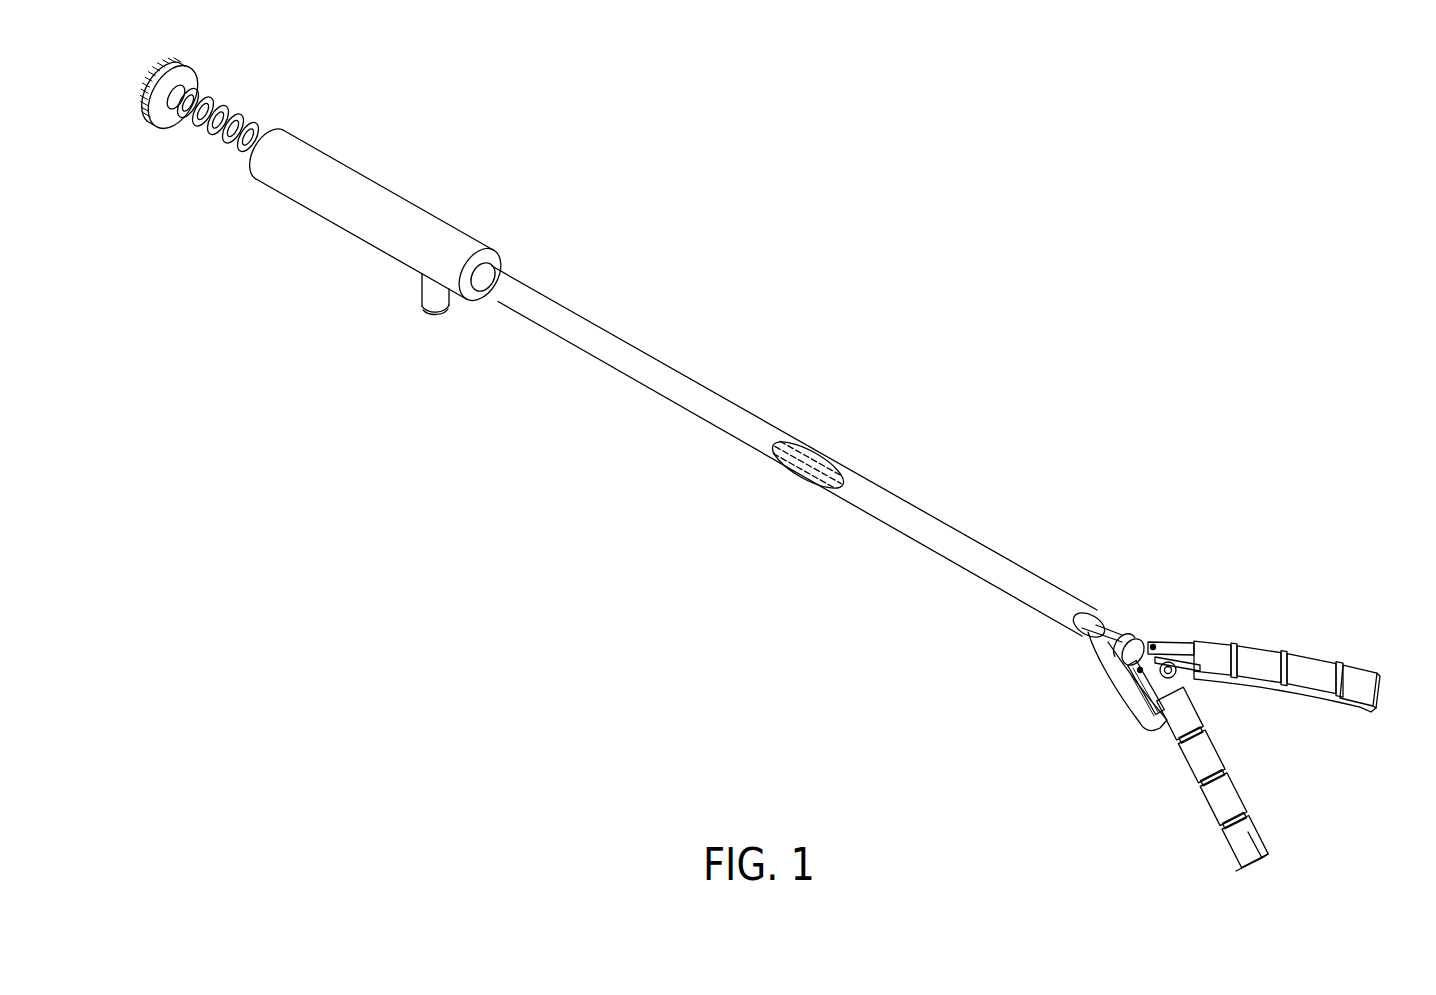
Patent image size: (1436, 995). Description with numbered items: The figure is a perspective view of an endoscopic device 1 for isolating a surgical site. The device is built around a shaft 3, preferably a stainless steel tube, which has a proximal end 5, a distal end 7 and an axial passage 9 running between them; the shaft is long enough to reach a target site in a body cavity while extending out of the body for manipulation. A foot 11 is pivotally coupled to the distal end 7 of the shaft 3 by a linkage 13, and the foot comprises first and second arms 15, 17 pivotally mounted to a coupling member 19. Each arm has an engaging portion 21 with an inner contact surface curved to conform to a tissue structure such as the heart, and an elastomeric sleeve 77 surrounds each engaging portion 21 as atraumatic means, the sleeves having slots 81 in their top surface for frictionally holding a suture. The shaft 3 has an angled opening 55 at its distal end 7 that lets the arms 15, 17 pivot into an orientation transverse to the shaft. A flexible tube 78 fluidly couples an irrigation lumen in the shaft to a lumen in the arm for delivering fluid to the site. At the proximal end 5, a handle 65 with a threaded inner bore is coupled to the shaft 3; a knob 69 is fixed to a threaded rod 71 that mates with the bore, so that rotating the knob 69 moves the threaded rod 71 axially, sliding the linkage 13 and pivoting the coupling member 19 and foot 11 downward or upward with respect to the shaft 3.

The endoscopic device 1 is at (916, 268).
The shaft 3 is at (693, 400).
The proximal end 5 is at (512, 272).
The distal end 7 is at (1148, 638).
The axial passage 9 is at (827, 455).
The foot 11 is at (1370, 632).
The linkage 13 is at (1108, 620).
The first arm 15 is at (1338, 712).
The second arm 17 is at (1204, 808).
The coupling member 19 is at (1158, 645).
The engaging portion 21 is at (1279, 698).
The angled opening 55 is at (1117, 625).
The handle 65 is at (438, 210).
The knob 69 is at (188, 76).
The threaded rod 71 is at (258, 123).
The elastomeric sleeve 77 is at (1285, 656).
The flexible tube 78 is at (1137, 731).
The slots 81 is at (1236, 642).